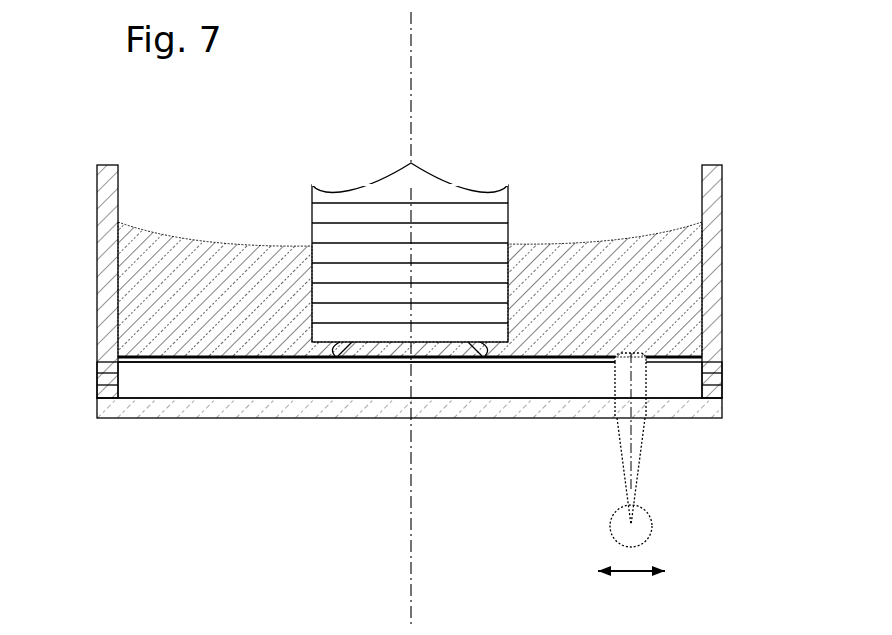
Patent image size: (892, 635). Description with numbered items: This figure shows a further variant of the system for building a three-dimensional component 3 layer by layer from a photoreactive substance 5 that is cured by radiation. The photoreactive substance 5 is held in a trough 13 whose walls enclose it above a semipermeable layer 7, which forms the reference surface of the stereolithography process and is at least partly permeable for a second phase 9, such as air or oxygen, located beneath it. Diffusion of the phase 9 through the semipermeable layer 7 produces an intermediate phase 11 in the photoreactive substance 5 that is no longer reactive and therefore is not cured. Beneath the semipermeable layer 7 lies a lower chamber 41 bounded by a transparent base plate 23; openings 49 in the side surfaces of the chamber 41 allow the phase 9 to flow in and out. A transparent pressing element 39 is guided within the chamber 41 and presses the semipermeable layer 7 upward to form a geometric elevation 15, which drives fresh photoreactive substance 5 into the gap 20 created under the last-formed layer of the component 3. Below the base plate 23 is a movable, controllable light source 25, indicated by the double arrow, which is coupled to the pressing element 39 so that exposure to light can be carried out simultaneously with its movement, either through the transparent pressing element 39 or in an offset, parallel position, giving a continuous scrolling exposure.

The three-dimensional component 3 is at (517, 172).
The photoreactive substance 5 is at (187, 297).
The semipermeable layer 7 is at (661, 357).
The second phase 9 is at (272, 382).
The intermediate phase 11 is at (145, 357).
The trough 13 is at (740, 162).
The geometric elevation 15 is at (620, 336).
The gap 20 is at (352, 350).
The transparent base plate 23 is at (444, 412).
The light source 25 is at (643, 527).
The pressing element 39 is at (638, 372).
The chamber 41 is at (193, 396).
The openings 49 is at (108, 381).